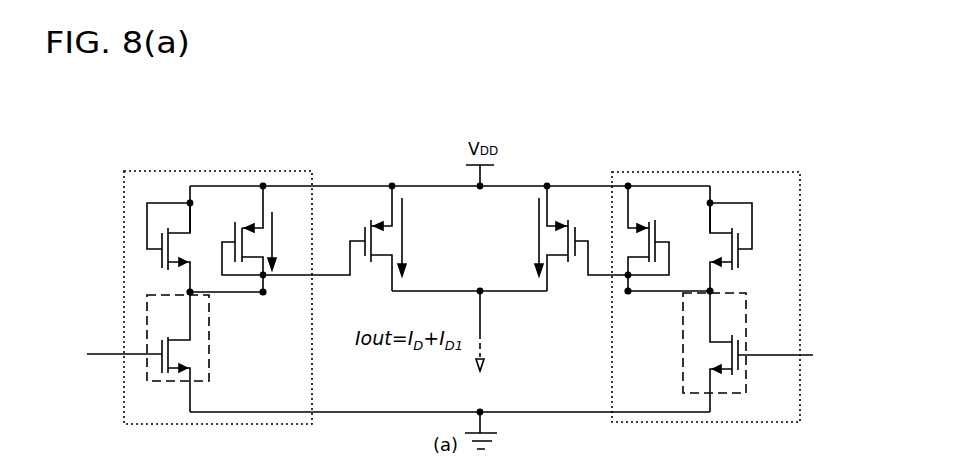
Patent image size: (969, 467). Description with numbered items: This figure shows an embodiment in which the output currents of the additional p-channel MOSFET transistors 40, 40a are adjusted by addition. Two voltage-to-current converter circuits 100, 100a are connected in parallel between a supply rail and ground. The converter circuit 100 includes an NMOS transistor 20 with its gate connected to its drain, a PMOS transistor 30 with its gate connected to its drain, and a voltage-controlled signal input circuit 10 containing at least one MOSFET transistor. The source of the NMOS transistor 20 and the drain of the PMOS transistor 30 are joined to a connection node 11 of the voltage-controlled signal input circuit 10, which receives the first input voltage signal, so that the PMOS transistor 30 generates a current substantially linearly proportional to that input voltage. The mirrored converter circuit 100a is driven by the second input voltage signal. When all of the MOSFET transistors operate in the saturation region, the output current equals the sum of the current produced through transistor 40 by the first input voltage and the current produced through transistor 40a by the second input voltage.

The voltage-current converter circuit 100 is at (212, 171).
The voltage to current converter circuit 100a is at (703, 172).
The voltage-controlled signal input circuit 10 is at (177, 377).
The connection node 11 is at (189, 290).
The NMOS transistor 20 is at (177, 231).
The PMOS transistor 30 is at (247, 226).
The additional p-channel MOSFET transistor 40 is at (381, 224).
The additional p-channel MOSFET transistor 40a is at (557, 224).